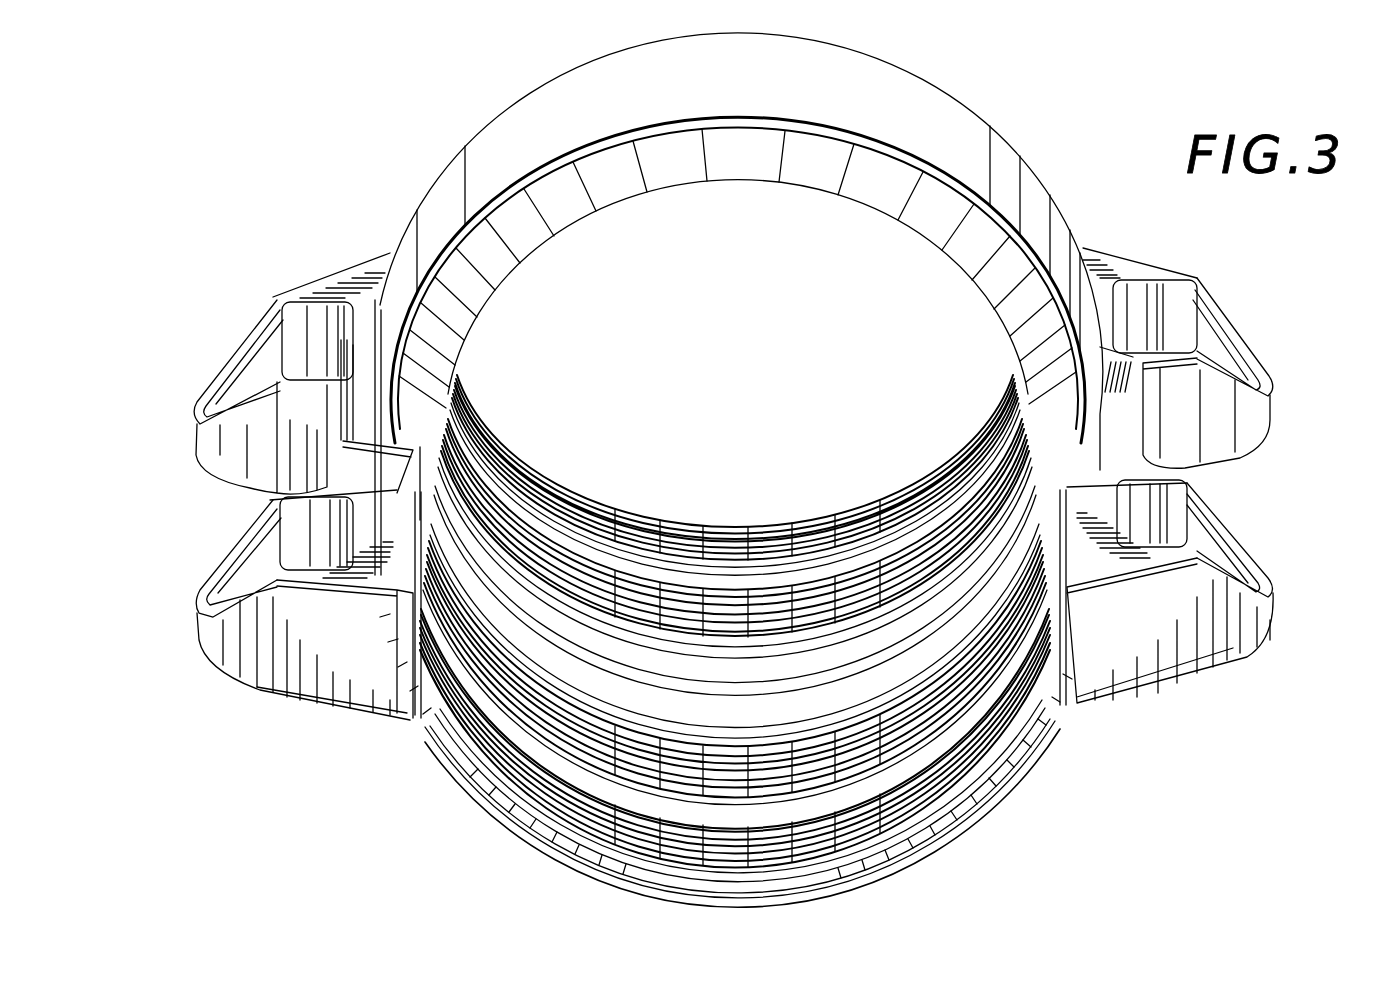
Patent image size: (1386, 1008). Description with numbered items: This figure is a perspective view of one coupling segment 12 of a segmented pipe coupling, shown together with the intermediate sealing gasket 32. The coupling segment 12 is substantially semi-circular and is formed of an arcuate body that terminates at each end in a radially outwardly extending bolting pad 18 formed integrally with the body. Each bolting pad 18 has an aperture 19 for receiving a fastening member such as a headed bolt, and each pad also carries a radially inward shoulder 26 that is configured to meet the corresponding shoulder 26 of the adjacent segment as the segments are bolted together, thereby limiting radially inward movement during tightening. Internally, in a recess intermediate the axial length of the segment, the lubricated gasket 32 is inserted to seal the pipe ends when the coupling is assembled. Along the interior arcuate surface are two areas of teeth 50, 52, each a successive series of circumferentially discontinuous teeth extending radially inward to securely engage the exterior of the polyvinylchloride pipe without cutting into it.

The coupling segment 12 is at (355, 785).
The bolting pad 18 is at (1237, 423).
The aperture 19 is at (267, 357).
The radially inward shoulder 26 is at (340, 280).
The gasket 32 is at (735, 163).
The area of teeth 50 is at (758, 545).
The area of teeth 52 is at (717, 760).